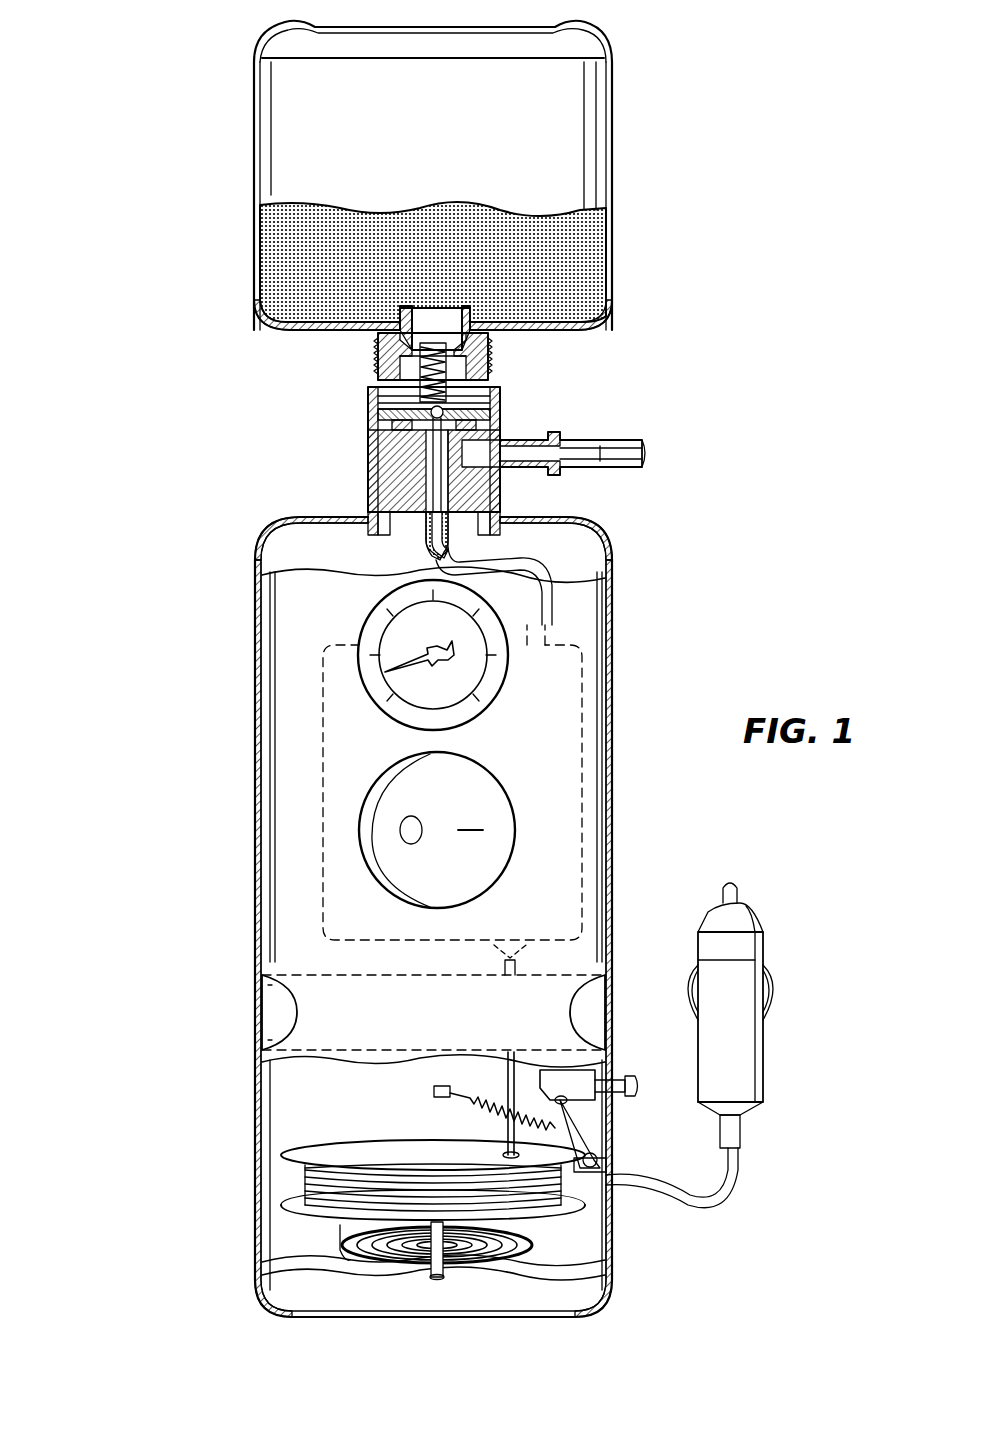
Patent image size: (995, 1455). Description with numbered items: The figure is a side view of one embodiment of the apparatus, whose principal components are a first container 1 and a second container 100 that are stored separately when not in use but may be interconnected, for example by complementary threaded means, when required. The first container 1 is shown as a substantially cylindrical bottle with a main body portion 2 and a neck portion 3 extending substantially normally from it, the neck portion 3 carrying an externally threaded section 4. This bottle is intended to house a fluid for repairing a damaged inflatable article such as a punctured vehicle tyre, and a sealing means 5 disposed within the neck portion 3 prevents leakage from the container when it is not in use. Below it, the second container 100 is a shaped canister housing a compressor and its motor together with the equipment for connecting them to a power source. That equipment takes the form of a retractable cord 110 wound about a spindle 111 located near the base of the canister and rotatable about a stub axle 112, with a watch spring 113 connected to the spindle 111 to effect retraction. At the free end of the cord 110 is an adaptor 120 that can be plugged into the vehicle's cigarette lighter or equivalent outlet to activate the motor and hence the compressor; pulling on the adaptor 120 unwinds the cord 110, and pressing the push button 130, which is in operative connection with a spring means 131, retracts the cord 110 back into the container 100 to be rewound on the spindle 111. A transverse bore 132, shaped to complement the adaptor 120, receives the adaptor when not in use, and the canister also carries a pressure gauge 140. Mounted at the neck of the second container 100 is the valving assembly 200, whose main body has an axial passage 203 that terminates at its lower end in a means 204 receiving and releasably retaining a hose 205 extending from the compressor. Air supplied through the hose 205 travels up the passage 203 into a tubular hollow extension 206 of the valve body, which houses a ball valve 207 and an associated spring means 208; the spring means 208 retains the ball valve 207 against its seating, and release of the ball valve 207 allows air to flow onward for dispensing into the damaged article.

The first container 1 is at (205, 252).
The main body portion 2 is at (468, 185).
The neck portion 3 is at (376, 338).
The externally threaded section 4 is at (378, 362).
The sealing means 5 is at (445, 288).
The second container 100 is at (205, 778).
The retractable cord 110 is at (705, 1192).
The spindle 111 is at (325, 1152).
The stub axle 112 is at (432, 1270).
The watch spring 113 is at (338, 1213).
The adaptor 120 is at (748, 1048).
The push button 130 is at (628, 1085).
The spring means 131 is at (465, 1118).
The bore 132 is at (272, 1017).
The pressure gauge 140 is at (362, 678).
The valving assembly 200 is at (383, 449).
The passage 203 is at (432, 452).
The hose receiving means 204 is at (425, 516).
The hose 205 is at (540, 582).
The tubular hollow extension 206 is at (480, 340).
The ball valve 207 is at (366, 420).
The spring means 208 is at (452, 370).